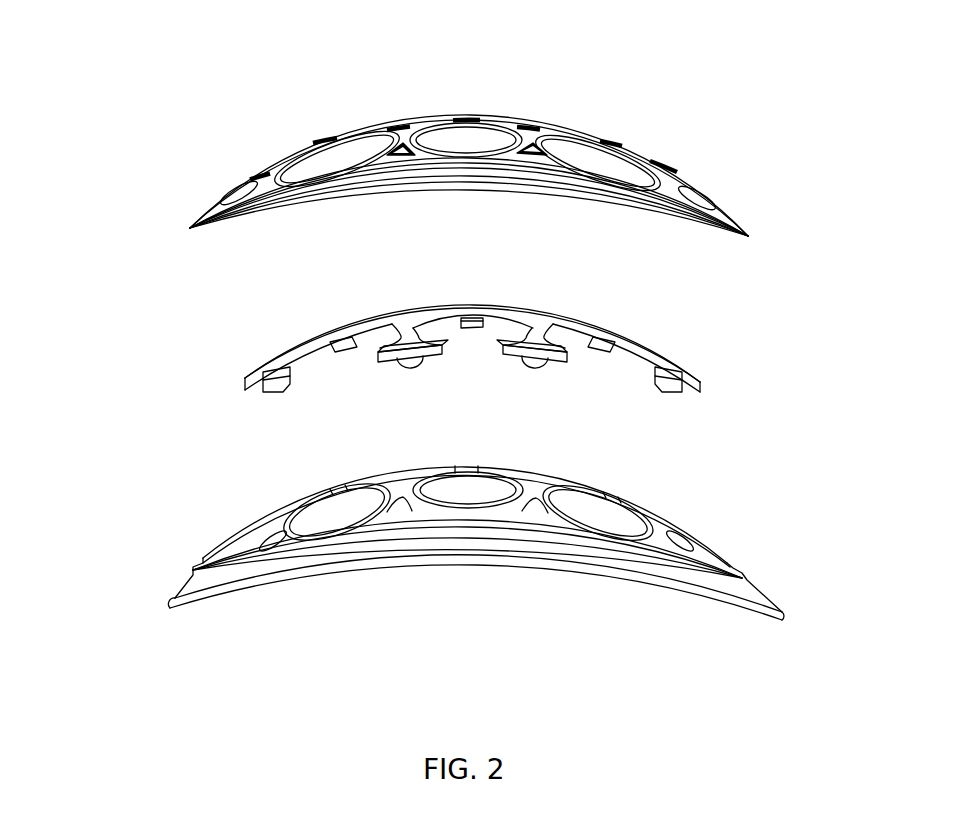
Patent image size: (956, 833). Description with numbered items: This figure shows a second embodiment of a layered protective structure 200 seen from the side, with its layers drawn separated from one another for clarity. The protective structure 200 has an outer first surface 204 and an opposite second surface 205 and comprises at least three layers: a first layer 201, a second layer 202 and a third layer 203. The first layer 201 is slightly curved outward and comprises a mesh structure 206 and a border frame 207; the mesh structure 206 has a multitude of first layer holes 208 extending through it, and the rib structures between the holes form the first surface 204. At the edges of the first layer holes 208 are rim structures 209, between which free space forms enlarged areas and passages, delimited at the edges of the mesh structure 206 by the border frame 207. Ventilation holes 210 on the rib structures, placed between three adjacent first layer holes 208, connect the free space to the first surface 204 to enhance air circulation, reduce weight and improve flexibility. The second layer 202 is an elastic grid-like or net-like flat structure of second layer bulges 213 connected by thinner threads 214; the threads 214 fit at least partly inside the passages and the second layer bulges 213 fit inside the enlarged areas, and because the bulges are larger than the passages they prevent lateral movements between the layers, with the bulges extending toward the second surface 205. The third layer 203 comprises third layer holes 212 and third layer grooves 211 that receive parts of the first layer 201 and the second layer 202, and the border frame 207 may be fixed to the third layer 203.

The protective structure 200 is at (113, 31).
The first layer 201 is at (216, 197).
The second layer 202 is at (245, 383).
The third layer 203 is at (182, 592).
The first surface 204 is at (473, 105).
The second surface 205 is at (473, 577).
The mesh structure 206 is at (288, 141).
The border frame 207 is at (189, 229).
The first layer holes 208 is at (598, 166).
The rim structures 209 is at (343, 147).
The ventilation holes 210 is at (537, 127).
The third layer grooves 211 is at (681, 533).
The third layer holes 212 is at (605, 512).
The second layer bulges 213 is at (345, 350).
The threads 214 is at (310, 340).